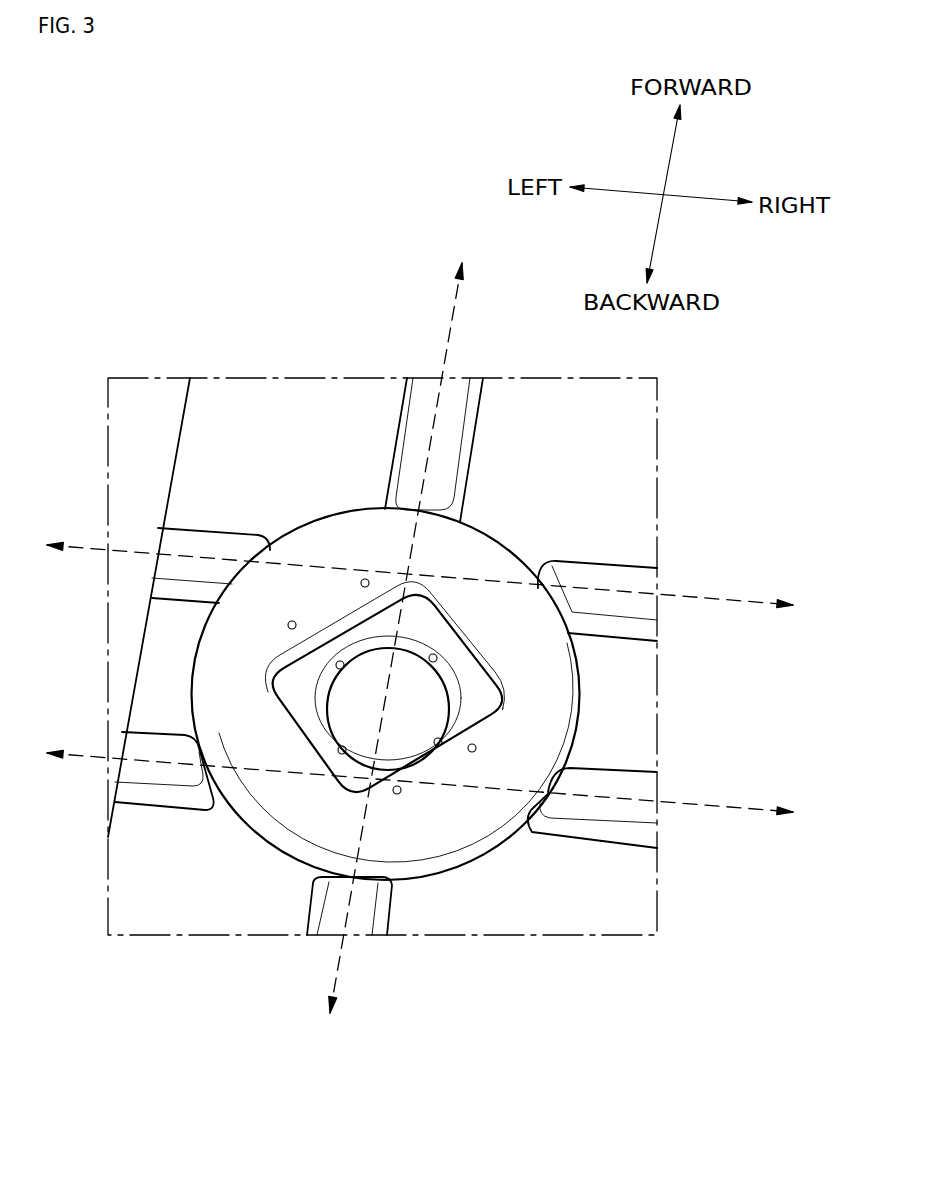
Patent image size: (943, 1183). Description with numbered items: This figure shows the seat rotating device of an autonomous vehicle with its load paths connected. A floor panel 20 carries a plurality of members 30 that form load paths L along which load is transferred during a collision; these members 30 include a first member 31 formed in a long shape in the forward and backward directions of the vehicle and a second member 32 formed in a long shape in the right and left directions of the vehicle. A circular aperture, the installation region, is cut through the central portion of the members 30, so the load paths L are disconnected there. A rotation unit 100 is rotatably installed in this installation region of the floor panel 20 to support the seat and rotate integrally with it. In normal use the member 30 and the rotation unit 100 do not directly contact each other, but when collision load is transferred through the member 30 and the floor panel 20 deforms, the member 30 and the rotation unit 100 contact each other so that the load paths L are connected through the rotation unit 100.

The floor panel 20 is at (627, 500).
The member 30 is at (368, 275).
The first member 31 is at (403, 430).
The second member 32 is at (240, 547).
The rotation unit 100 is at (590, 717).
The load path L is at (450, 335).